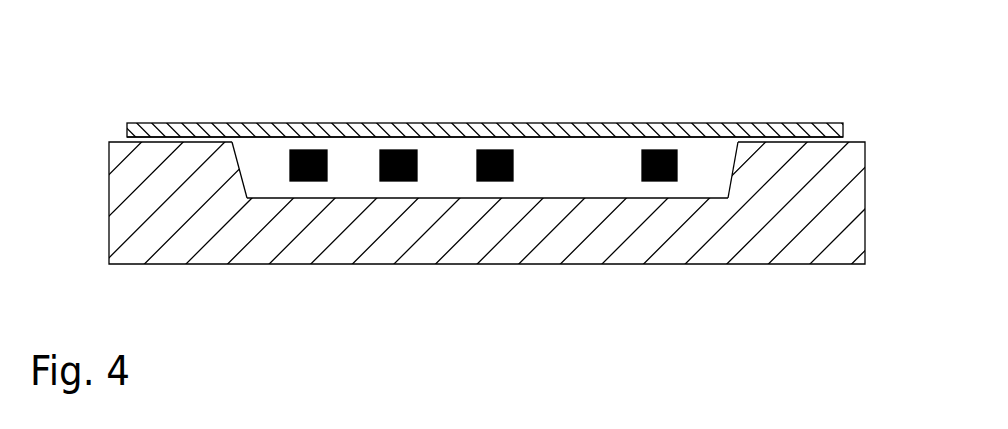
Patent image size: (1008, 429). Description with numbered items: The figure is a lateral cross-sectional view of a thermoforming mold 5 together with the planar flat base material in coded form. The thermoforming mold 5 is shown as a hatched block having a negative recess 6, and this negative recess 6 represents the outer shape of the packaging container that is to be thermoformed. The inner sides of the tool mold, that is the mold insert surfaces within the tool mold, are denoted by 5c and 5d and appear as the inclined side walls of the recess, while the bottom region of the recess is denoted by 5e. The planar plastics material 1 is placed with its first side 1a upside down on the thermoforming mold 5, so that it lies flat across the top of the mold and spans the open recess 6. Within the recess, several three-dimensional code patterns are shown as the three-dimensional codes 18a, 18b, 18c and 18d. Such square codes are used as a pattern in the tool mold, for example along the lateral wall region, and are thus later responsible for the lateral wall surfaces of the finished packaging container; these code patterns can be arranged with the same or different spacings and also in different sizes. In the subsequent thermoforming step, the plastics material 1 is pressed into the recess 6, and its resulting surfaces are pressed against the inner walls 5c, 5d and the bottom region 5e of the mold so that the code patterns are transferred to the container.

The planar plastics material 1 is at (796, 130).
The first side 1a is at (578, 140).
The thermoforming mold 5 is at (844, 204).
The inner side of the tool mold 5c is at (241, 161).
The inner side of the tool mold 5d is at (733, 160).
The bottom region 5e is at (590, 197).
The negative recess 6 is at (485, 200).
The 3D code 18a is at (315, 149).
The 3D code 18b is at (398, 149).
The 3D code 18c is at (495, 149).
The 3D code 18d is at (666, 149).